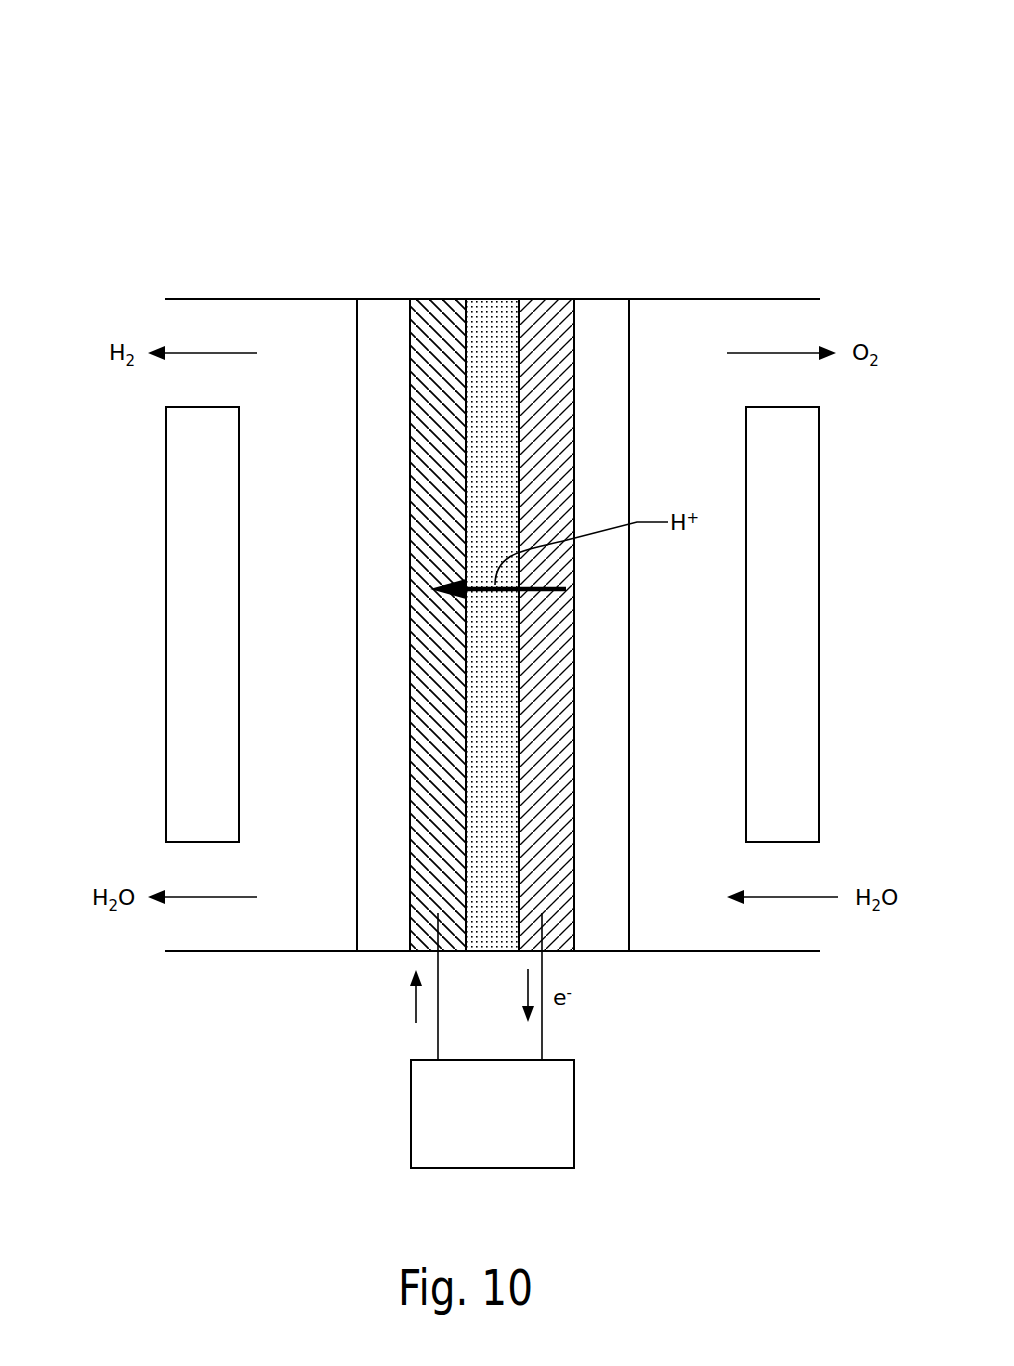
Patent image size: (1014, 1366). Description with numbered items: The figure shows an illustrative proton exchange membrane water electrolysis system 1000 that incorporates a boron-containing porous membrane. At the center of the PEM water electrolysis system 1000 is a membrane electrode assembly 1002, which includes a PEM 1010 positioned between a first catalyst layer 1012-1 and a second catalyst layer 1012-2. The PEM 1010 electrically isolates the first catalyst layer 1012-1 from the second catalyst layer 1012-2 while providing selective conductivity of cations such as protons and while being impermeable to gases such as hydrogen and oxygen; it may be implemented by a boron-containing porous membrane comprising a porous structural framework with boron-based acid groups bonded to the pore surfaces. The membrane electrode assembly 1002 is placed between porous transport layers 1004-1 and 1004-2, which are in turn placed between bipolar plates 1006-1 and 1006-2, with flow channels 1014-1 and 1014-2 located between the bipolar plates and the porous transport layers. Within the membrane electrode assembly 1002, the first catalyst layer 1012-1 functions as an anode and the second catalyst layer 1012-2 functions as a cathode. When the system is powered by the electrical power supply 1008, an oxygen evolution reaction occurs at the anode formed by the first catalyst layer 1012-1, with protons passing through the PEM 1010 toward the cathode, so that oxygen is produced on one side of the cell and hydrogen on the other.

The PEM water electrolysis system 1000 is at (193, 82).
The membrane electrode assembly 1002 is at (574, 172).
The porous transport layer 1004-1 is at (602, 299).
The porous transport layer 1004-2 is at (383, 299).
The bipolar plate 1006-1 is at (819, 578).
The bipolar plate 1006-2 is at (166, 578).
The electrical power supply 1008 is at (513, 1126).
The PEM 1010 is at (480, 299).
The first catalyst layer 1012-1 is at (545, 299).
The second catalyst layer 1012-2 is at (435, 299).
The flow channel 1014-1 is at (717, 673).
The flow channel 1014-2 is at (330, 673).